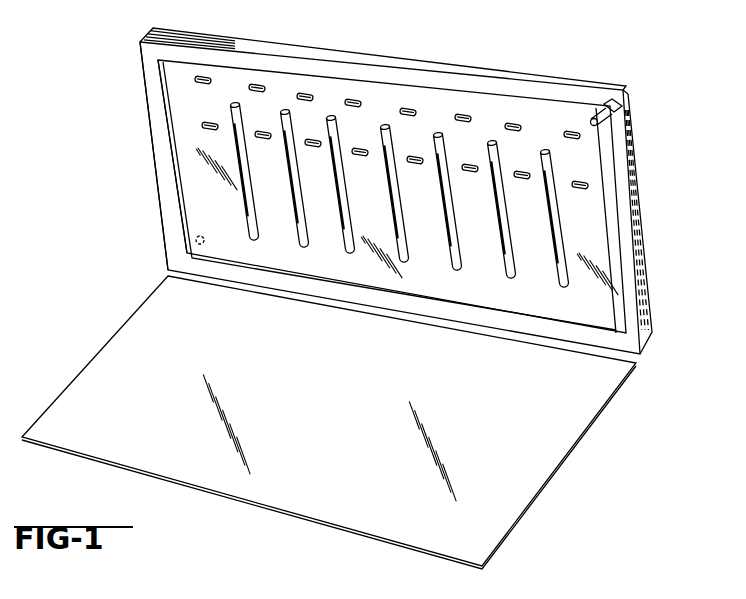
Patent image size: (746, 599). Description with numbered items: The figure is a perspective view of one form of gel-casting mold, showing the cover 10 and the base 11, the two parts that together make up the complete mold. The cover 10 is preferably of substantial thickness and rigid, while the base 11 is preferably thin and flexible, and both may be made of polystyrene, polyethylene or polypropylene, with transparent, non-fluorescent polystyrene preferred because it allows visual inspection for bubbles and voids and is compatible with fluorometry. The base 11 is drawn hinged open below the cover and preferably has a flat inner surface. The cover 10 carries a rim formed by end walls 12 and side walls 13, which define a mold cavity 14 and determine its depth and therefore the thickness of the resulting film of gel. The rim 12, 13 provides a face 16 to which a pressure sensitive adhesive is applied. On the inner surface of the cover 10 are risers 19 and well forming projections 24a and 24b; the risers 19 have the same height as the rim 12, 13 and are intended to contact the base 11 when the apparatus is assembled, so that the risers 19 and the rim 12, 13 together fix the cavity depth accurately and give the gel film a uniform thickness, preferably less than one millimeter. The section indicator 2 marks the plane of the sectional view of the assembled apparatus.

The cover 10 is at (647, 218).
The base 11 is at (562, 475).
The end walls 12 is at (155, 166).
The side walls 13 is at (495, 63).
The mold cavity 14 is at (172, 108).
The face 16 is at (174, 244).
The risers 19 is at (504, 248).
The well forming projections 24a is at (205, 128).
The well forming projections 24b is at (201, 76).
The section line 2- 2 is at (307, 23).